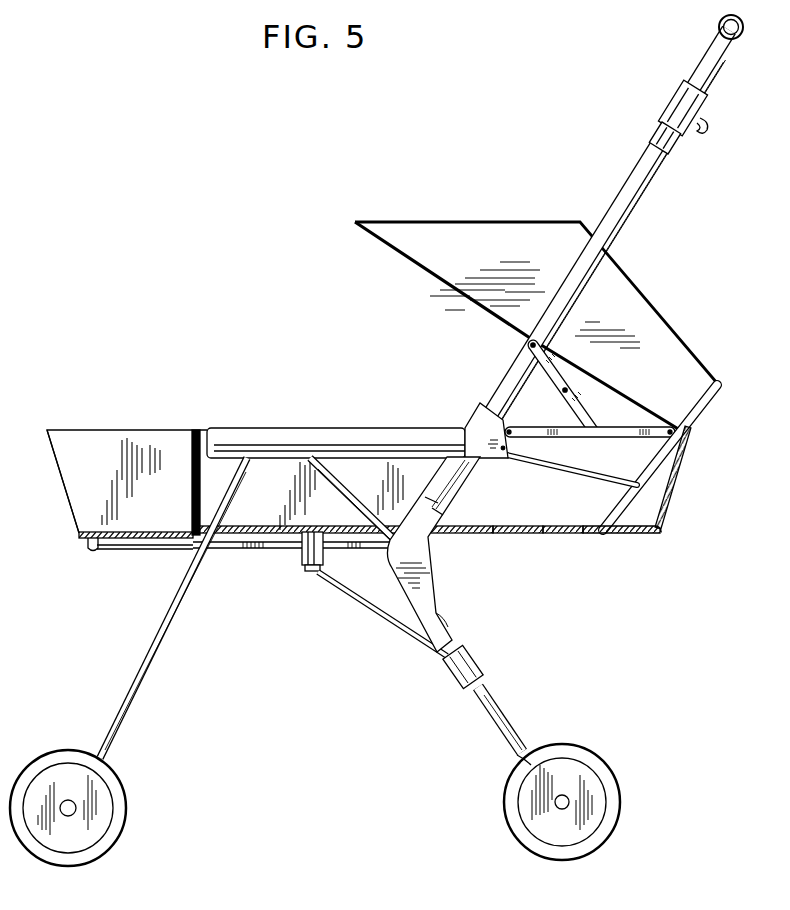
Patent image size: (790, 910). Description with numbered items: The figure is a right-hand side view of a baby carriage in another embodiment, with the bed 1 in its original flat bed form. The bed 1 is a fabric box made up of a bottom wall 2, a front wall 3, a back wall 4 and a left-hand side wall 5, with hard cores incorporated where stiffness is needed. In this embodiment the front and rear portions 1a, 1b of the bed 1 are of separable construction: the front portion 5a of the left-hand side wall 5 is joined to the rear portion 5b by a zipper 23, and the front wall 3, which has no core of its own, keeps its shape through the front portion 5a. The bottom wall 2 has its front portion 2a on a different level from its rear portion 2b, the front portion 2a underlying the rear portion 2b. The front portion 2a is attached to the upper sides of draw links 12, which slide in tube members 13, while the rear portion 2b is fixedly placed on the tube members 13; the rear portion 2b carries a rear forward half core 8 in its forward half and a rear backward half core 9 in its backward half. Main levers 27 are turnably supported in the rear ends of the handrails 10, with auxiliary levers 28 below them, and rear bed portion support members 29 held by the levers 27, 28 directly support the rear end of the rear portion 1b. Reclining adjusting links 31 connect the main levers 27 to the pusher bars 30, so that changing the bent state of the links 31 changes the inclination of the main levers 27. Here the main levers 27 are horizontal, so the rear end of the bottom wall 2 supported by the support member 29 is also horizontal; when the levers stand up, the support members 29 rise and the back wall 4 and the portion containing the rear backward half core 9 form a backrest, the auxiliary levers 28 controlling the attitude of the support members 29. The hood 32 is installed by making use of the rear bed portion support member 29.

The baby carriage bed 1 is at (553, 537).
The front portion of the bed 1a is at (108, 428).
The rear portion of the bed 1b is at (462, 537).
The bottom wall 2 is at (507, 537).
The front portion of the bottom wall 2a is at (143, 543).
The rear portion of the bottom wall 2b is at (285, 545).
The front wall 3 is at (64, 492).
The back wall 4 is at (670, 499).
The left-hand side wall 5 is at (280, 480).
The front portion of the left-hand side wall 5a is at (150, 442).
The rear portion of the left-hand side wall 5b is at (378, 472).
The rear forward half core 8 is at (340, 535).
The rear backward half core 9 is at (583, 535).
The handrail 10 is at (436, 430).
The draw link 12 is at (105, 552).
The tube member 13 is at (223, 548).
The zipper 23 is at (192, 448).
The main lever 27 is at (628, 427).
The auxiliary lever 28 is at (610, 488).
The rear bed portion support member 29 is at (696, 408).
The pusher bar 30 is at (637, 192).
The reclining adjusting link 31 is at (550, 376).
The hood 32 is at (447, 222).